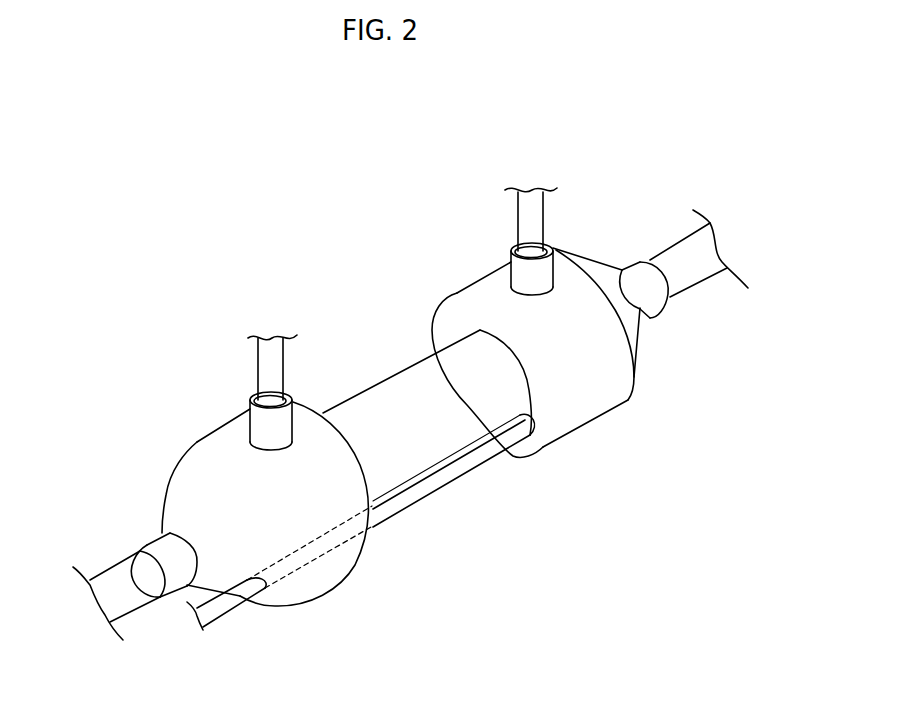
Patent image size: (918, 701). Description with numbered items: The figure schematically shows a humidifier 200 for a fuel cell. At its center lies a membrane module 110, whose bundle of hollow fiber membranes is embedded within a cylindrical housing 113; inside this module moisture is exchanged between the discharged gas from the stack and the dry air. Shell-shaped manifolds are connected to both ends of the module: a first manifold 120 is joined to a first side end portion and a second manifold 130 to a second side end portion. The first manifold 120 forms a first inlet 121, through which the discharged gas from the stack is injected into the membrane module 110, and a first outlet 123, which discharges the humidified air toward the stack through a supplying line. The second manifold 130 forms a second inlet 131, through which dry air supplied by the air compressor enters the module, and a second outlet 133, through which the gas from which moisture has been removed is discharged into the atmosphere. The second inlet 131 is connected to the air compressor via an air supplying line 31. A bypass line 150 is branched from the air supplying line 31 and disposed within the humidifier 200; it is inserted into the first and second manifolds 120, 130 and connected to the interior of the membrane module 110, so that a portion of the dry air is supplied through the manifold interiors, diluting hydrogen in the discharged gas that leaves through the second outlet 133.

The humidifier 200 is at (366, 147).
The membrane module 110 is at (394, 362).
The housing 113 is at (352, 398).
The first manifold 120 is at (594, 240).
The first inlet 121 is at (517, 268).
The first outlet 123 is at (660, 302).
The second manifold 130 is at (316, 611).
The second inlet 131 is at (167, 542).
The second outlet 133 is at (260, 422).
The air supplying line 31 is at (110, 577).
The bypass line 150 is at (225, 602).